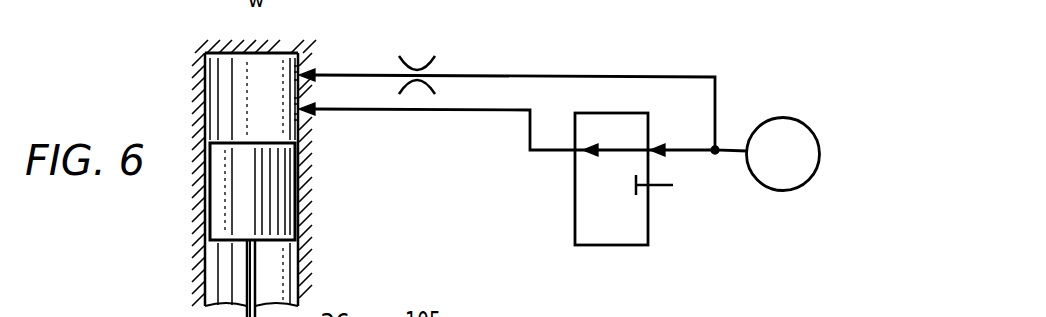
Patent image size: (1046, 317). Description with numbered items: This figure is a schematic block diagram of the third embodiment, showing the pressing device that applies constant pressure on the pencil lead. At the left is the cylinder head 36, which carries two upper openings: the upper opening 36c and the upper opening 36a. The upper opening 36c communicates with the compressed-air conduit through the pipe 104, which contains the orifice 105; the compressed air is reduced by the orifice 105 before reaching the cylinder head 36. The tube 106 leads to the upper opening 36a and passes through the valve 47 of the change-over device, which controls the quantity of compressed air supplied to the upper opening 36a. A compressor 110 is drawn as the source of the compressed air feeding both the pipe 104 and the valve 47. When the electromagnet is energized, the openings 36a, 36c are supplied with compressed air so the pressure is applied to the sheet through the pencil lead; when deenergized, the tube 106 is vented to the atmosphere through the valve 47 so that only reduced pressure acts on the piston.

The cylinder head 36 is at (283, 53).
The upper opening 36c is at (303, 70).
The upper opening 36a is at (303, 114).
The pipe 104 is at (494, 75).
The orifice 105 is at (416, 70).
The tube 106 is at (460, 112).
The valve 47 is at (578, 205).
The compressor 110 is at (801, 117).